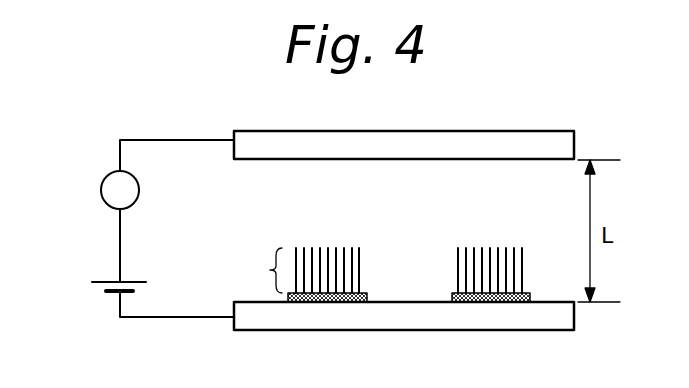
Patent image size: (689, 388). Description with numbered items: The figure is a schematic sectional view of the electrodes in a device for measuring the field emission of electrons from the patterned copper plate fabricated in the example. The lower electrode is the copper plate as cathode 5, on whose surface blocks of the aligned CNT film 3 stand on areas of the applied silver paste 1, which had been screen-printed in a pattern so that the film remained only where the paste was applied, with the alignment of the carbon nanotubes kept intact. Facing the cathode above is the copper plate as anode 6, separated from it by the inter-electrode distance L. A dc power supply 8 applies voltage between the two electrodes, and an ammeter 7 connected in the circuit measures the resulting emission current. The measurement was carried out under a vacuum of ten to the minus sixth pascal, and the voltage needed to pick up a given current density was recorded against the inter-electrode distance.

The applied silver paste 1 is at (368, 302).
The aligned CNT film 3 is at (268, 270).
The copper plate as cathode 5 is at (557, 318).
The copper plate as anode 6 is at (492, 140).
The ammeter 7 is at (102, 172).
The dc power supply 8 is at (106, 302).